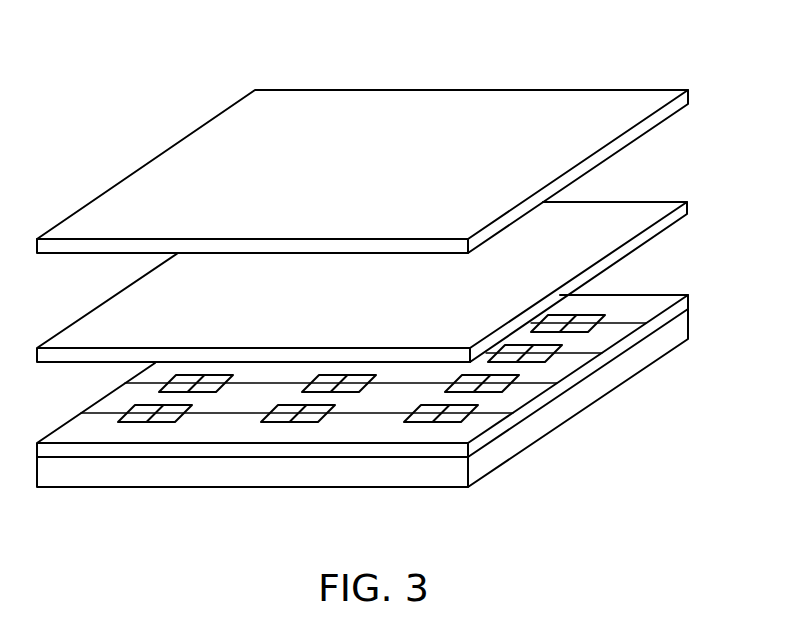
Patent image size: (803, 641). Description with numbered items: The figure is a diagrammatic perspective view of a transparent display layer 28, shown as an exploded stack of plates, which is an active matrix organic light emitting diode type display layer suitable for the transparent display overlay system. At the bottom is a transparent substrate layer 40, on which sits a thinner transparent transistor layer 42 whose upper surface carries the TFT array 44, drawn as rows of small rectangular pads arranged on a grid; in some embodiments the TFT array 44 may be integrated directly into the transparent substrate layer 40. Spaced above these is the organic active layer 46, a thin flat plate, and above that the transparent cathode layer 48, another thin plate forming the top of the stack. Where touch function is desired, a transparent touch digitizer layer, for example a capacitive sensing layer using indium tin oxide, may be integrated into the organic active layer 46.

The transparent display layer 28 is at (89, 50).
The transparent substrate layer 40 is at (565, 410).
The transparent transistor layer 42 is at (627, 343).
The TFT array 44 is at (363, 420).
The organic active layer 46 is at (683, 211).
The transparent cathode layer 48 is at (559, 99).